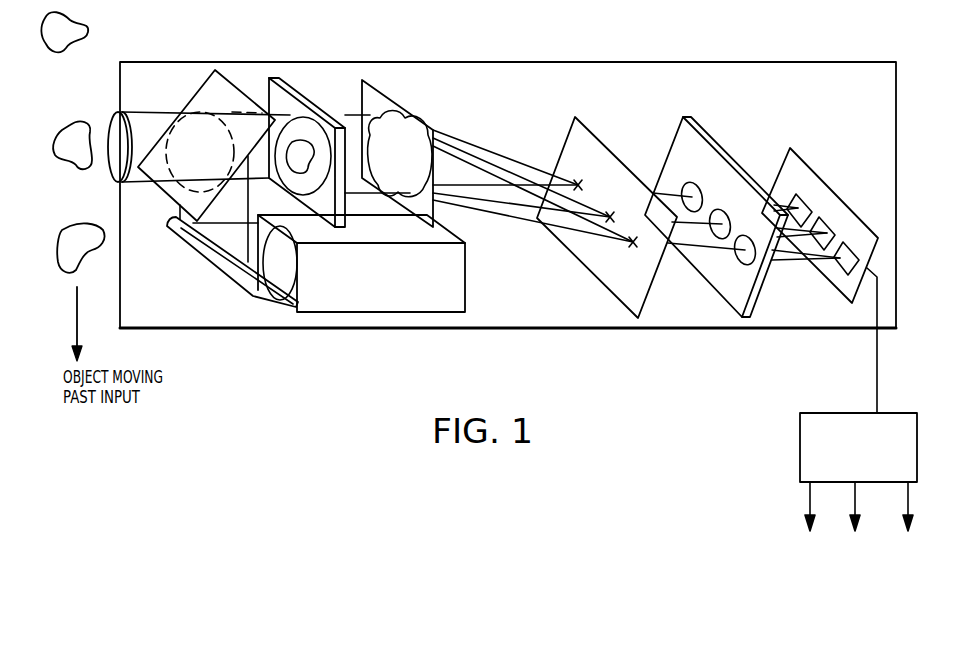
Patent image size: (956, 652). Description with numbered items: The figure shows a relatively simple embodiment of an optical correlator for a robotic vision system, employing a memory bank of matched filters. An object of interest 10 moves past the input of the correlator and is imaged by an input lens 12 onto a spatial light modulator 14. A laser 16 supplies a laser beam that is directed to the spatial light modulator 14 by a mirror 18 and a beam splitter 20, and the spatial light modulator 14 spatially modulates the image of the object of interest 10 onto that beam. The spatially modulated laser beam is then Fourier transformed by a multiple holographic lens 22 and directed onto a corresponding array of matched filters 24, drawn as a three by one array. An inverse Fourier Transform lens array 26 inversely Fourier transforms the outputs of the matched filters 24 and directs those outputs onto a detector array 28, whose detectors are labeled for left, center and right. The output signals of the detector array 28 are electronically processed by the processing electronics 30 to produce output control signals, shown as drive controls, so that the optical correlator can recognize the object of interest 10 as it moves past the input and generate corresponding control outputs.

The object of interest 10 is at (47, 43).
The input lens 12 is at (117, 113).
The spatial light modulator 14 is at (277, 80).
The laser 16 is at (467, 280).
The mirror 18 is at (205, 258).
The beam splitter 20 is at (207, 75).
The multiple holographic lens 22 is at (447, 87).
The array of matched filters 24 is at (639, 99).
The inverse Fourier Transform lens array 26 is at (803, 121).
The detector array 28 is at (808, 264).
The processing electronics 30 is at (835, 412).